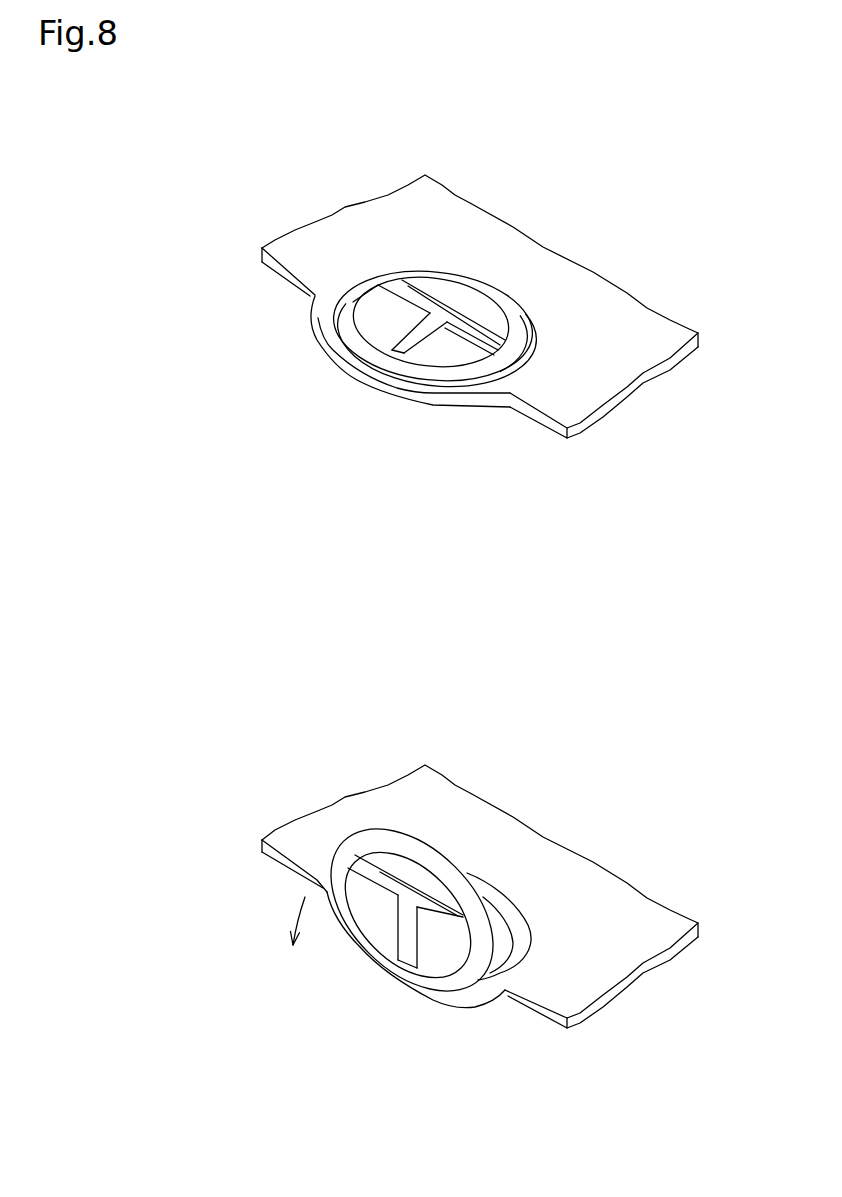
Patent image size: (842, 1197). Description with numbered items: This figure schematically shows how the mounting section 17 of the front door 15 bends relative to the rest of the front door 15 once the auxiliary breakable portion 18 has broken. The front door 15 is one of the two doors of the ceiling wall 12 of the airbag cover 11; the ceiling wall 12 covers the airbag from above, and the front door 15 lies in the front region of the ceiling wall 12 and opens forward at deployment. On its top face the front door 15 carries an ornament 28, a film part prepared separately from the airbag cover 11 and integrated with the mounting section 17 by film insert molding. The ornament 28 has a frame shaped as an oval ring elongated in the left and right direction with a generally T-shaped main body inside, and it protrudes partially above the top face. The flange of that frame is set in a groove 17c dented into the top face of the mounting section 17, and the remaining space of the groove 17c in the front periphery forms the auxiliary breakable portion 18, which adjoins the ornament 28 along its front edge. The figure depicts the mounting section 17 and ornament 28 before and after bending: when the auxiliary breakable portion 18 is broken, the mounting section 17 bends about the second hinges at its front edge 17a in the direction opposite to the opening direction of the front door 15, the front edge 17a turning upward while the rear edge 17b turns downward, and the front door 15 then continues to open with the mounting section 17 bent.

The airbag cover 11 is at (517, 233).
The ceiling wall 12 is at (484, 554).
The front door 15 is at (484, 554).
The mounting section 17 is at (522, 649).
The front edge 17a is at (493, 300).
The rear edge 17b is at (415, 392).
The groove 17c is at (622, 296).
The auxiliary breakable portion 18 is at (523, 327).
The ornament 28 is at (450, 265).